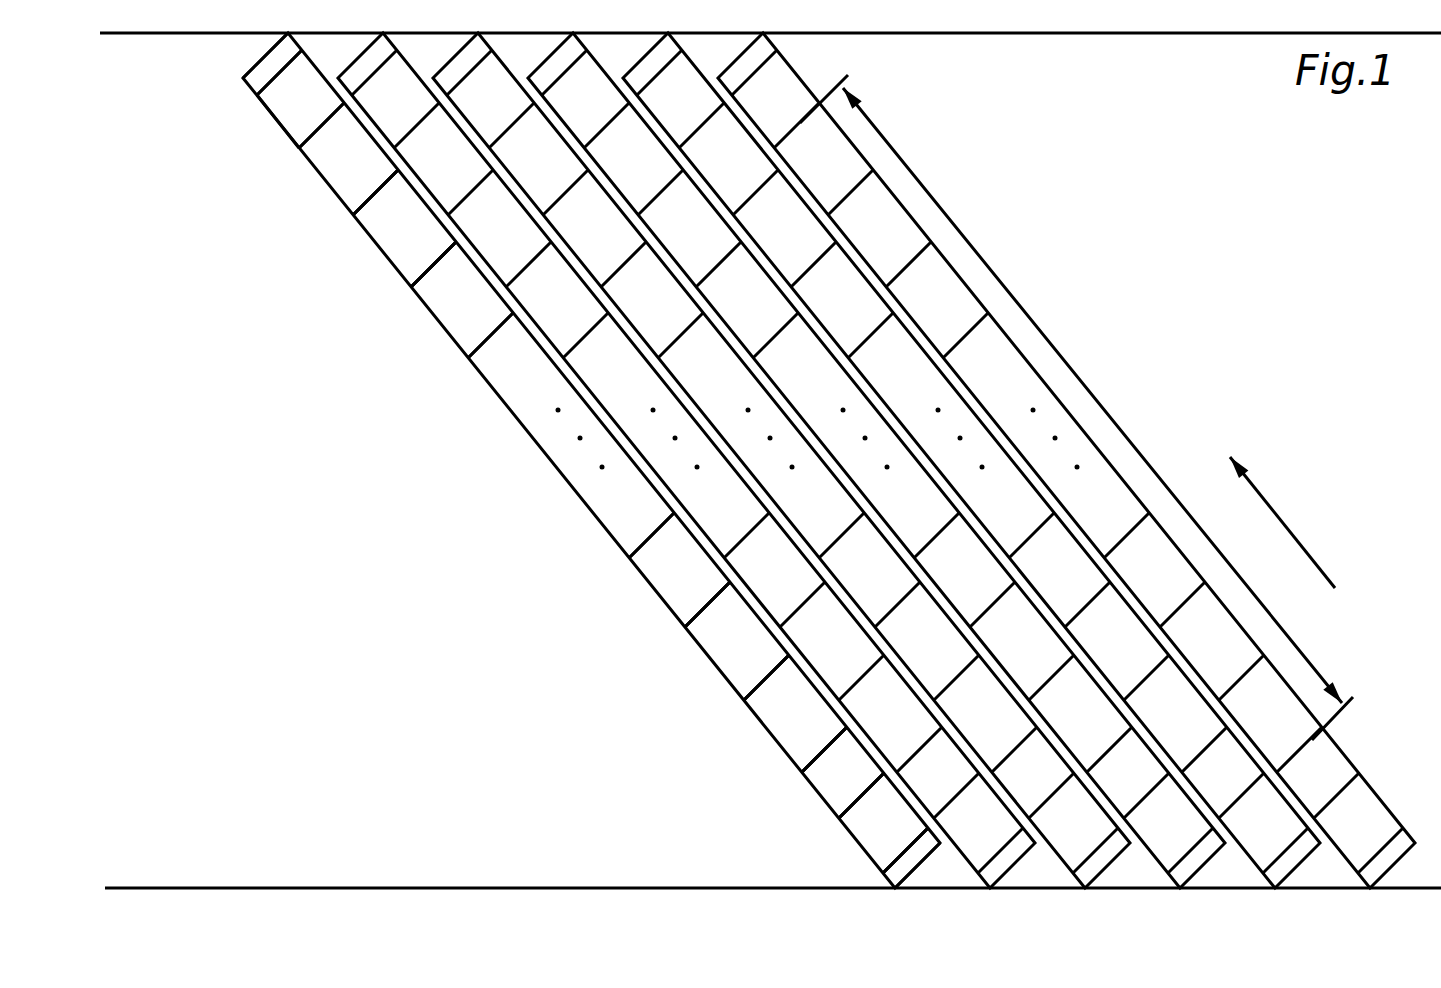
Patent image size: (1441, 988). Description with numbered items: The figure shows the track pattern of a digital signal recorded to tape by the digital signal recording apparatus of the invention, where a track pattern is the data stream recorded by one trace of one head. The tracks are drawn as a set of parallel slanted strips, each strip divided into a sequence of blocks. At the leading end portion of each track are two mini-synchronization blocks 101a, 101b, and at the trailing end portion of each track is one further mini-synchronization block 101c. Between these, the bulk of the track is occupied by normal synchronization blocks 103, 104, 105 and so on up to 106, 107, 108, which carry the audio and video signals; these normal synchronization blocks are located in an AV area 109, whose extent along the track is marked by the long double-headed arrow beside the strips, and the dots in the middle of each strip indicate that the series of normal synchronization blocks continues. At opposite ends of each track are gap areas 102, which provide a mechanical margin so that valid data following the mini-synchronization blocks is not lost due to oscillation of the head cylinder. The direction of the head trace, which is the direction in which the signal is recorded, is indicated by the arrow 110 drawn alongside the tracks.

The gap area 102 is at (252, 78).
The mini-synchronization block 101a is at (870, 827).
The mini-synchronization block 101b is at (835, 783).
The mini-synchronization block 101c is at (285, 112).
The normal synchronization block 103 is at (788, 732).
The normal synchronization block 104 is at (728, 655).
The normal synchronization block 105 is at (667, 577).
The normal synchronization block 106 is at (460, 312).
The normal synchronization block 107 is at (392, 233).
The normal synchronization block 108 is at (337, 167).
The AV area 109 is at (1076, 407).
The arrow 110 is at (1282, 522).